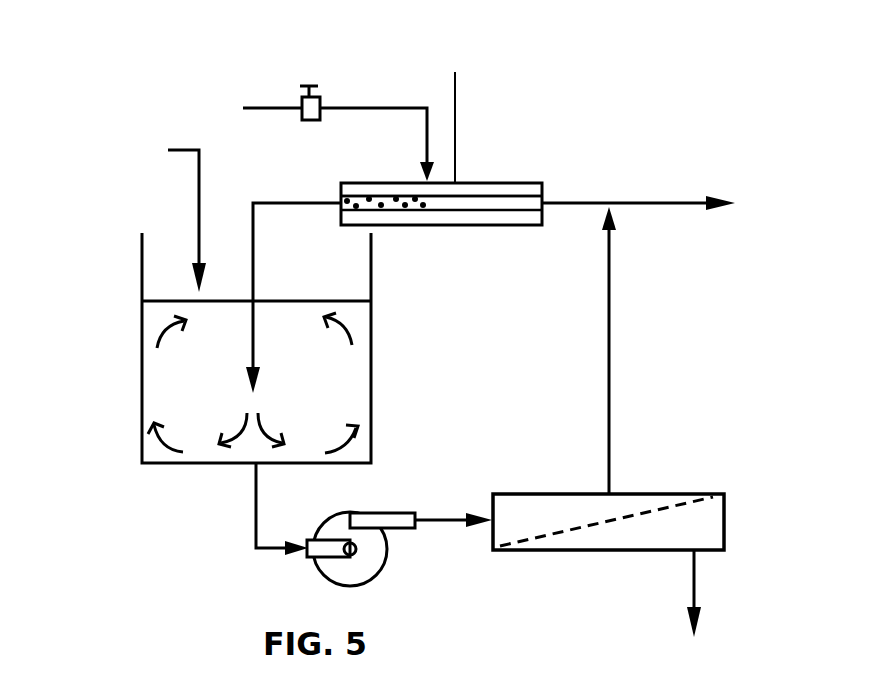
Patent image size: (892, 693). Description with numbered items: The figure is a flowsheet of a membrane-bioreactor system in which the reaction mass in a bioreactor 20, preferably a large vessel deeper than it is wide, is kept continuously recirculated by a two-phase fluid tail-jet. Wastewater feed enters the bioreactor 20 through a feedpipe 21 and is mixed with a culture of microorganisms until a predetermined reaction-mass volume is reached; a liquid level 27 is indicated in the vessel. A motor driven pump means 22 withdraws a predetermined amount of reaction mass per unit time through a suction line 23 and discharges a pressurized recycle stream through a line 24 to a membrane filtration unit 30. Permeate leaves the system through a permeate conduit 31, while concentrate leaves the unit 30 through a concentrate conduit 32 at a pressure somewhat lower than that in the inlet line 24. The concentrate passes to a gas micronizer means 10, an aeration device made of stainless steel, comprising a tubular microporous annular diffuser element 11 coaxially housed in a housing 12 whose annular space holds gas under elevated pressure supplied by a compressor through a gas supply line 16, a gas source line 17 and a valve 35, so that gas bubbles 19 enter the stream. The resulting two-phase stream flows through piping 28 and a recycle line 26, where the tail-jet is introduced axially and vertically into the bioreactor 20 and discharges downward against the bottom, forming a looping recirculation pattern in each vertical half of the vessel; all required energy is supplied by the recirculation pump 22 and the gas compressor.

The gas micronizer means 10 is at (503, 227).
The annular diffuser element 11 is at (460, 196).
The housing 12 is at (443, 109).
The gas supply line 16 is at (382, 108).
The gas source line 17 is at (257, 105).
The gas bubble compartment 19 is at (362, 197).
The bioreactor 20 is at (142, 372).
The feedpipe 21 is at (197, 195).
The pump means 22 is at (387, 572).
The suction line 23 is at (256, 543).
The line 24 is at (457, 510).
The recycle line 26 is at (258, 378).
The liquid level 27 is at (373, 290).
The piping 28 is at (688, 200).
The membrane filtration unit 30 is at (574, 552).
The permeate conduit 31 is at (697, 578).
The concentrate conduit 32 is at (611, 393).
The valve 35 is at (307, 80).